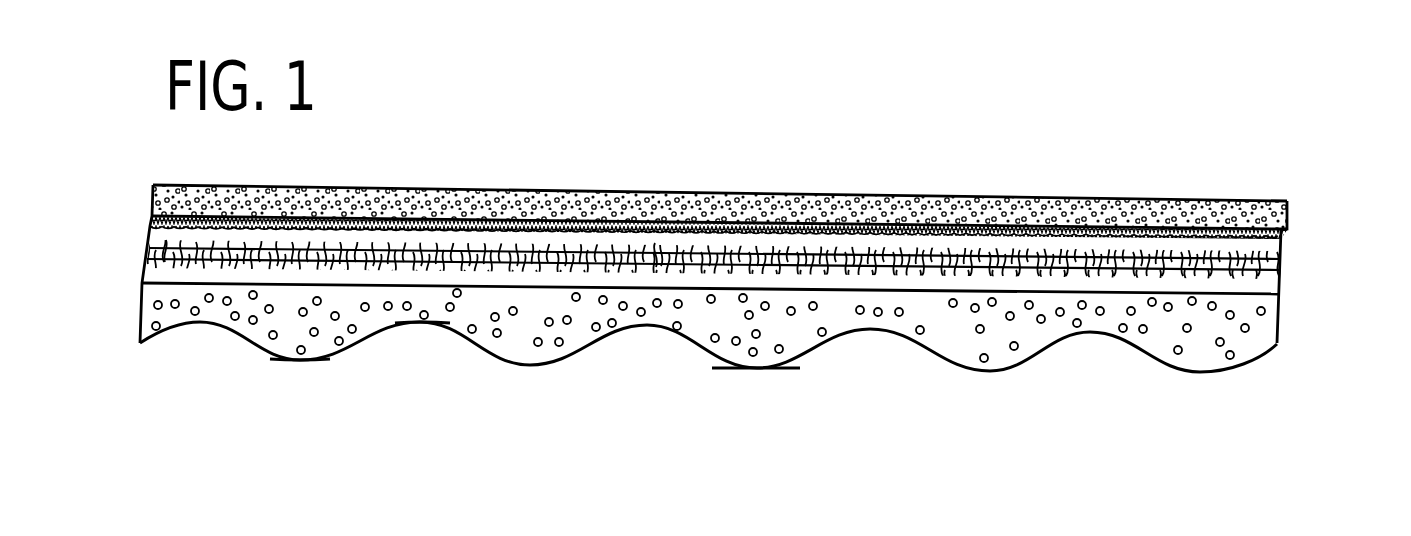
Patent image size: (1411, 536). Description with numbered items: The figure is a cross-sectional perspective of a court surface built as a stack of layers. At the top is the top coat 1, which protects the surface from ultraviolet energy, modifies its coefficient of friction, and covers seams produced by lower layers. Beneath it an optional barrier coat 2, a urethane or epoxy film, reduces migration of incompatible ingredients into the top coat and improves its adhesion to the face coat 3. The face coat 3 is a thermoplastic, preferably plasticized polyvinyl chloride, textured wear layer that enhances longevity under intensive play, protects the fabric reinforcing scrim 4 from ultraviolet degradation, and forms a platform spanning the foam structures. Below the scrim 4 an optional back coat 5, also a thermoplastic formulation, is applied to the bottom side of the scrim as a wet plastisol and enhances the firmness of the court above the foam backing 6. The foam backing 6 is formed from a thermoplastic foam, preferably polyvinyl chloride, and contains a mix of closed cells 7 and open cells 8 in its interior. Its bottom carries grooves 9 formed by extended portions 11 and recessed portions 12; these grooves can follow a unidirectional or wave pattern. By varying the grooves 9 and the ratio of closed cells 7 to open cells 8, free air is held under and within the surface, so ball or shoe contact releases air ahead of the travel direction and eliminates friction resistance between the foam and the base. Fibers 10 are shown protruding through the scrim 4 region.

The top coat 1 is at (1265, 200).
The barrier coat 2 is at (1286, 230).
The face coat 3 is at (1287, 250).
The scrim 4 is at (1283, 265).
The back coat 5 is at (1266, 286).
The foam backing 6 is at (1252, 320).
The closed cells 7 is at (773, 357).
The open cells 8 is at (540, 345).
The grooves 9 is at (222, 364).
The fibers 10 is at (168, 242).
The extended portions 11 is at (302, 361).
The recessed portions 12 is at (425, 324).